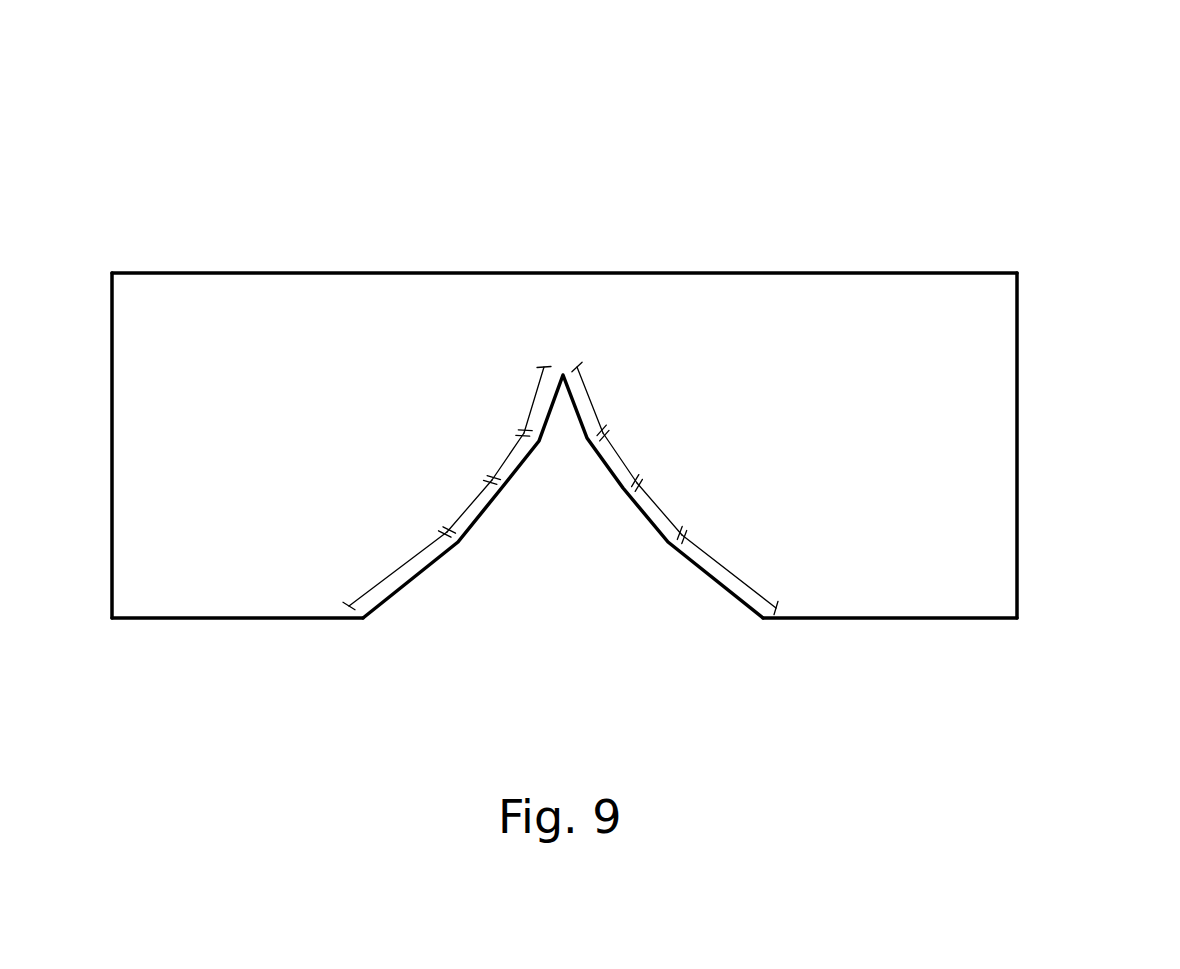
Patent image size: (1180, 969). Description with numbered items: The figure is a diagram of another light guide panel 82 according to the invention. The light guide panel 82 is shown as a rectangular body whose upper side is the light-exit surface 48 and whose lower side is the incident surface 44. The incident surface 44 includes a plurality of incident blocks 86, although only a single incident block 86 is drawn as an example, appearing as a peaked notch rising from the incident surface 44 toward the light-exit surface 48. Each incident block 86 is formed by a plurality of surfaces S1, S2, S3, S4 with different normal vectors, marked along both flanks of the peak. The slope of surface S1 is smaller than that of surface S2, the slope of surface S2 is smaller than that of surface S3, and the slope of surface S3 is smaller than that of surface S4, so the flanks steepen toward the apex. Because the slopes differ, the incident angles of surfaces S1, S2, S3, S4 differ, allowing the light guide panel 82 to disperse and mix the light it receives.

The light guide panel 82 is at (634, 369).
The light-exit surface 48 is at (871, 273).
The incident surface 44 is at (873, 619).
The incident block 86 is at (410, 578).
The surface S1 is at (560, 570).
The surface S2 is at (564, 505).
The surface S3 is at (564, 454).
The surface S4 is at (564, 397).